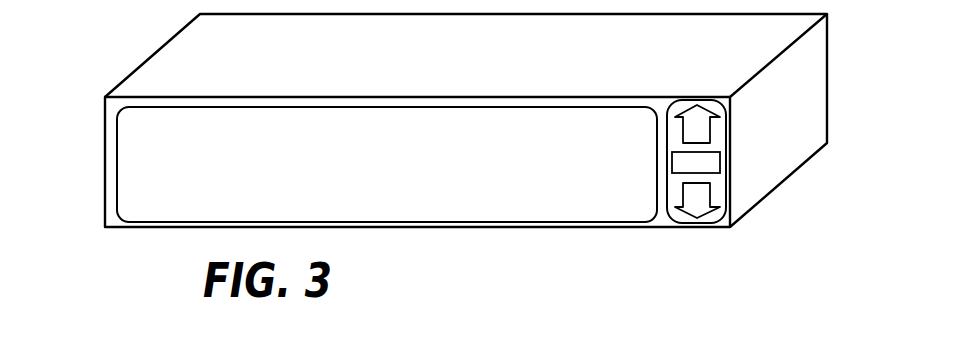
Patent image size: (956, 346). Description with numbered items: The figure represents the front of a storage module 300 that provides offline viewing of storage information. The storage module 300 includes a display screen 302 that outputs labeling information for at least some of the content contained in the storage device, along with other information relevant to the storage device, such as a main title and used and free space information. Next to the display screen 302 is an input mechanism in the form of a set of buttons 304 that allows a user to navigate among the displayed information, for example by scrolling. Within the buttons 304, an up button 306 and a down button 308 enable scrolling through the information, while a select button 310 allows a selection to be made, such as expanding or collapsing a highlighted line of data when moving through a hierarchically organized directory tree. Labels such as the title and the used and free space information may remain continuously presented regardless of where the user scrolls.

The storage module 300 is at (108, 80).
The display screen 302 is at (505, 175).
The buttons 304 is at (658, 222).
The up button 306 is at (698, 123).
The down button 308 is at (692, 205).
The select button 310 is at (708, 167).